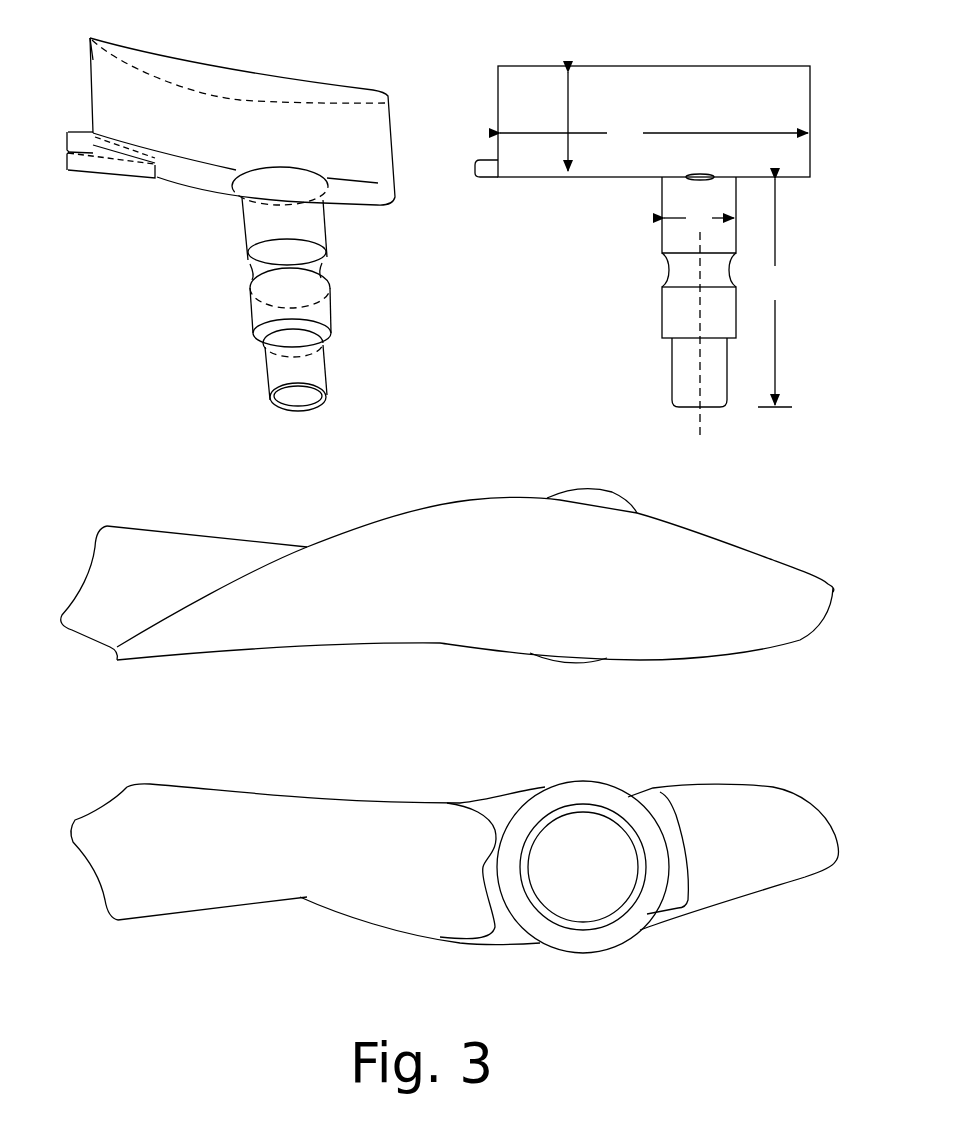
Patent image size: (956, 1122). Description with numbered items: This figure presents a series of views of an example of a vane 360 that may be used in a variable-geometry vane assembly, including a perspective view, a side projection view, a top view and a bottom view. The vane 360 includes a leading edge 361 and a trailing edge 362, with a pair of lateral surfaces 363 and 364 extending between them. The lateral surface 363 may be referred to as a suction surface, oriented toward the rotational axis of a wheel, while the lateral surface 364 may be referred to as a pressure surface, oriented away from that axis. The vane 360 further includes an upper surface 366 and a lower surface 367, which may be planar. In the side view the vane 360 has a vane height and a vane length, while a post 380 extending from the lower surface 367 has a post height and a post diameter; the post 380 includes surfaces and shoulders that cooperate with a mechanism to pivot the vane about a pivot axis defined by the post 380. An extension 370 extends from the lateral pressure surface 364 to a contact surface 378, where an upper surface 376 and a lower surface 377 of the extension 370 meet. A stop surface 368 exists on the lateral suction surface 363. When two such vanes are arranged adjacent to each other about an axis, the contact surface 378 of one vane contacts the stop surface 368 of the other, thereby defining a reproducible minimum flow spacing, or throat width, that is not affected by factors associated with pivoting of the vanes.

The vane 360 is at (316, 44).
The leading edge 361 is at (390, 137).
The trailing edge 362 is at (89, 46).
The lateral surface 363 is at (291, 141).
The lateral surface 364 is at (190, 141).
The upper surface 366 is at (270, 80).
The lower surface 367 is at (217, 190).
The stop surface 368 is at (383, 183).
The extension 370 is at (95, 189).
The upper surface 376 is at (136, 587).
The lower surface 377 is at (133, 882).
The contact surface 378 is at (95, 543).
The post 380 is at (352, 282).